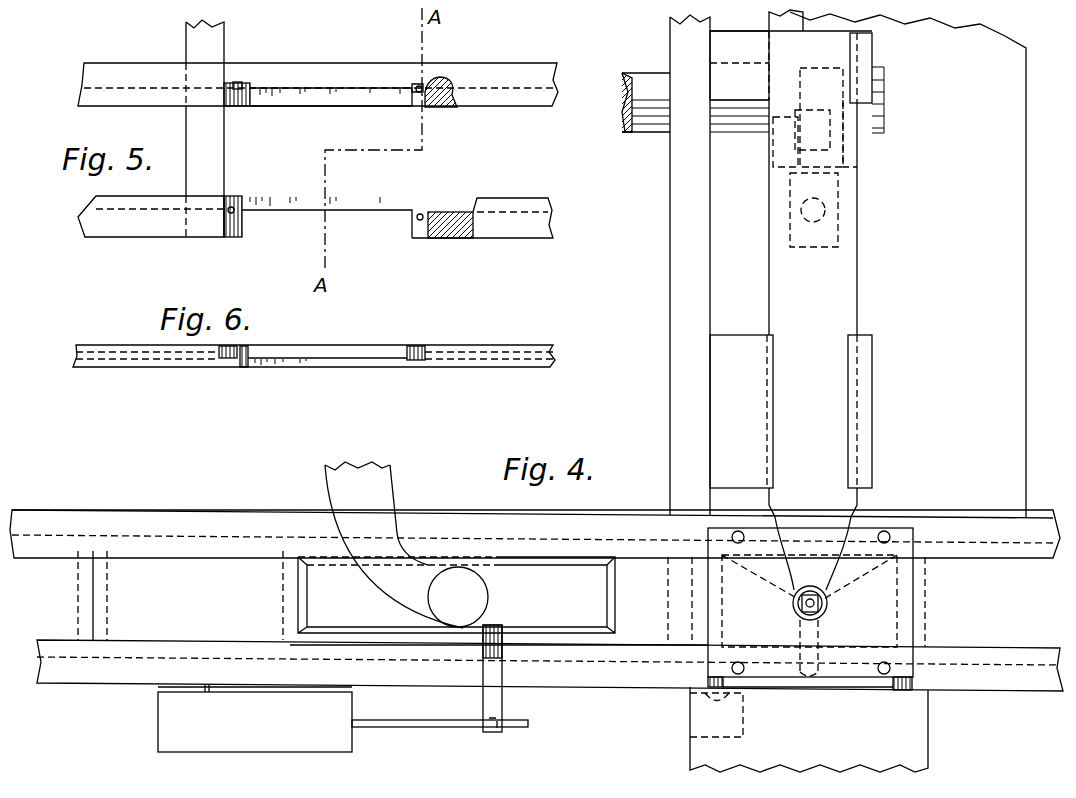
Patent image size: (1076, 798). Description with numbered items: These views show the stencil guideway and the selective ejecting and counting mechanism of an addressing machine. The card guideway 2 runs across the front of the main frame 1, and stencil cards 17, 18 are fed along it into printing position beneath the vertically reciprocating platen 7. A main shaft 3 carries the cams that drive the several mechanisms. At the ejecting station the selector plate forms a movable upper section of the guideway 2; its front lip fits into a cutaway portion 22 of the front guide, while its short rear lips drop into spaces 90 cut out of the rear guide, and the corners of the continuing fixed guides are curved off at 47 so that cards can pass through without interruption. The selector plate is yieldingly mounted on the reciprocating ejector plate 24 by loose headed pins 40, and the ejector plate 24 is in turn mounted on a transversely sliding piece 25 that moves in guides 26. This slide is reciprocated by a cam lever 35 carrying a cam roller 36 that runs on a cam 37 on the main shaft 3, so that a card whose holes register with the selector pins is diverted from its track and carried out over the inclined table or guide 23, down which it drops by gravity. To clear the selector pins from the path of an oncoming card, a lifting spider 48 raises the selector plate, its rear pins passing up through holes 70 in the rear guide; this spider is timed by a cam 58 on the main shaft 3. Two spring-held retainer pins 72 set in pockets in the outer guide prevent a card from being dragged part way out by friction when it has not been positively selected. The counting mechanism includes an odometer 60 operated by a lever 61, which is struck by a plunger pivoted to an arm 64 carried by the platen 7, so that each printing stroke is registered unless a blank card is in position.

In FIG. 5, the main frame 1 is at (215, 170).
In FIG. 4, the main frame 1 is at (670, 272).
In FIG. 5, the card guideway 2 is at (528, 100).
In FIG. 6, the card guideway 2 is at (200, 362).
In FIG. 4, the card guideway 2 is at (215, 522).
In FIG. 4, the main shaft 3 is at (649, 80).
In FIG. 4, the platen 7 is at (570, 572).
In FIG. 4, the stencil card 17 is at (648, 640).
In FIG. 4, the stencil card 18 is at (437, 642).
In FIG. 5, the cutaway portion 22 is at (397, 220).
In FIG. 6, the cutaway portion 22 is at (365, 360).
In FIG. 4, the cutaway portion 22 is at (850, 693).
In FIG. 4, the inclined table or guide 23 is at (913, 727).
In FIG. 4, the ejector plate 24 is at (905, 613).
In FIG. 4, the transversely sliding piece 25 is at (843, 288).
In FIG. 4, the guides 26 is at (872, 48).
In FIG. 4, the cam lever 35 is at (822, 157).
In FIG. 4, the cam roller 36 is at (777, 168).
In FIG. 4, the cam 37 is at (775, 108).
In FIG. 4, the loose headed pins 40 is at (887, 527).
In FIG. 5, the curved corners 47 is at (255, 88).
In FIG. 6, the curved corners 47 is at (250, 348).
In FIG. 4, the lifting spider 48 is at (862, 577).
In FIG. 4, the cam 58 is at (860, 156).
In FIG. 4, the odometer 60 is at (338, 733).
In FIG. 4, the lever 61 is at (435, 729).
In FIG. 4, the arm 64 is at (493, 700).
In FIG. 5, the holes 70 is at (237, 82).
In FIG. 5, the retainer pins 72 is at (242, 218).
In FIG. 5, the spaces 90 is at (224, 88).